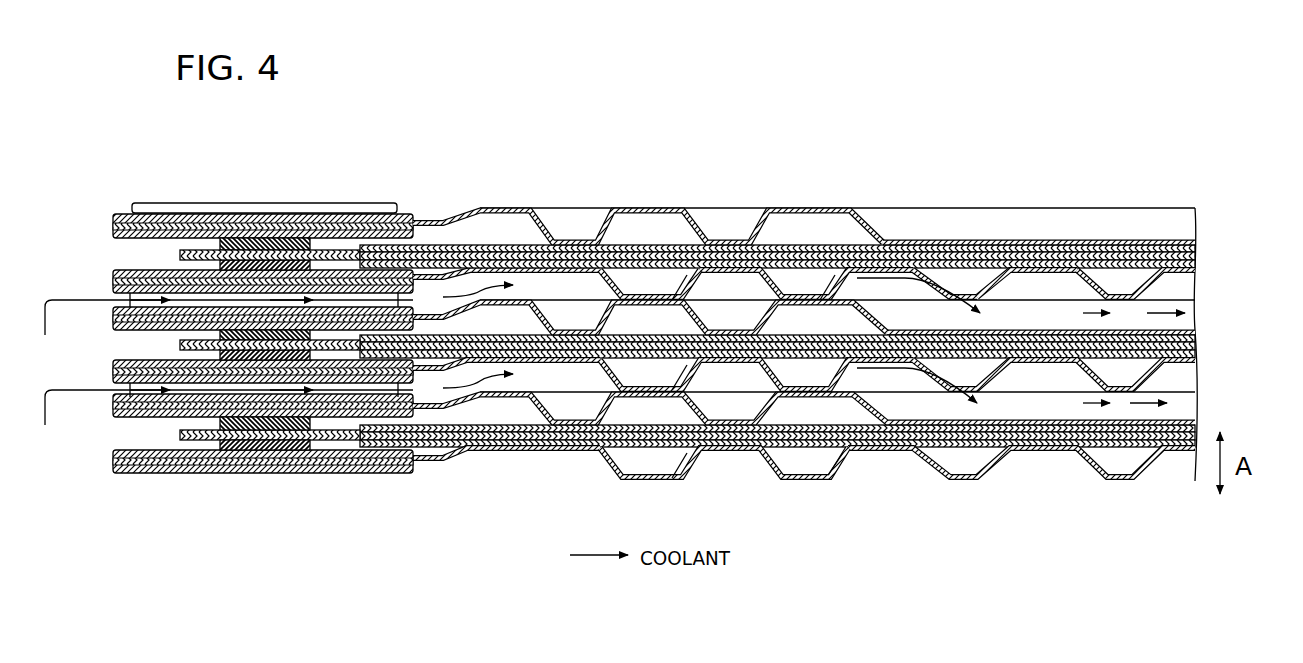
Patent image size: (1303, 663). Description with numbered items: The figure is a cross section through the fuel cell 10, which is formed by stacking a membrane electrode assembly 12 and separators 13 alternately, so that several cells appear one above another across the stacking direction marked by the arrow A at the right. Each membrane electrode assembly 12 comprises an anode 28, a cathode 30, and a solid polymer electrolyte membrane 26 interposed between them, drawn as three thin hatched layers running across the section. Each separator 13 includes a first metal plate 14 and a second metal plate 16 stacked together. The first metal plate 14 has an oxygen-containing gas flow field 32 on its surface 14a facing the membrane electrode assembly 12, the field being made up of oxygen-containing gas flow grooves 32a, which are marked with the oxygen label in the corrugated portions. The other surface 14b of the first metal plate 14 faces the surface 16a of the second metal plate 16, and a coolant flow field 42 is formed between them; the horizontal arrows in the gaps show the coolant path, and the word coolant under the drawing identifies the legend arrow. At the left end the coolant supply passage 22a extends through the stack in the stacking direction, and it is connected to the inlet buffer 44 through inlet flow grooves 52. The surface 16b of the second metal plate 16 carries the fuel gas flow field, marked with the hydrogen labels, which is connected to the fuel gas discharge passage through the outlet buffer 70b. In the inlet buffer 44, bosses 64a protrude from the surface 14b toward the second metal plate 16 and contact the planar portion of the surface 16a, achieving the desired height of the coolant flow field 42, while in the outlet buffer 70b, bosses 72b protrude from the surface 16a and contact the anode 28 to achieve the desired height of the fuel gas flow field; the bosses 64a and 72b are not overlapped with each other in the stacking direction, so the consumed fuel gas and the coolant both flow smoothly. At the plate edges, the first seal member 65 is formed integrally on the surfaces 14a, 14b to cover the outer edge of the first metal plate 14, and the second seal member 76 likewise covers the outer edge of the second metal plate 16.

The fuel cell 10 is at (404, 115).
The membrane electrode assembly 12 is at (1254, 222).
The separator 13 is at (1254, 358).
The first metal plate 14 is at (1173, 363).
The surface of first metal plate 14a is at (945, 285).
The surface of first metal plate 14b is at (997, 282).
The second metal plate 16 is at (1157, 208).
The surface of second metal plate 16a is at (870, 288).
The surface of second metal plate 16b is at (838, 312).
The coolant supply passage 22a is at (63, 437).
The solid polymer electrolyte membrane 26 is at (1200, 256).
The anode 28 is at (1200, 244).
The cathode 30 is at (1200, 268).
The oxygen-containing gas flow field 32 is at (975, 278).
The oxygen-containing gas flow grooves 32a is at (1110, 278).
The coolant flow field 42 is at (1007, 373).
The inlet buffer 44 is at (760, 290).
The inlet flow grooves 52 is at (243, 300).
The bosses 64a is at (690, 297).
The first seal member 65 is at (115, 285).
The outlet buffer 70b is at (622, 322).
The bosses 72b is at (535, 308).
The second seal member 76 is at (112, 317).